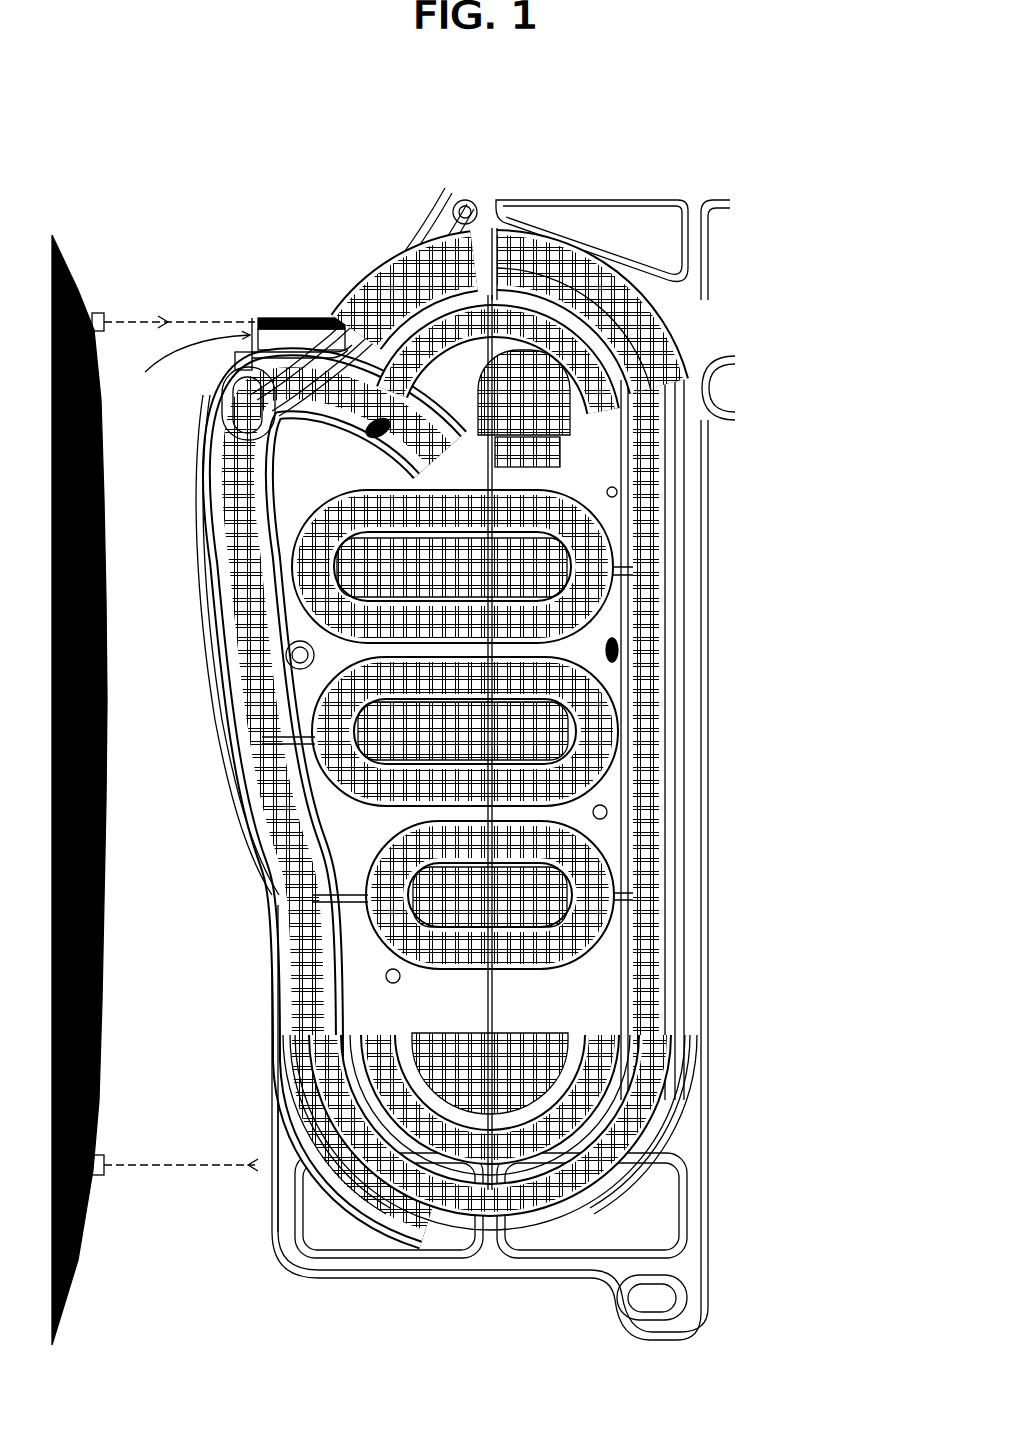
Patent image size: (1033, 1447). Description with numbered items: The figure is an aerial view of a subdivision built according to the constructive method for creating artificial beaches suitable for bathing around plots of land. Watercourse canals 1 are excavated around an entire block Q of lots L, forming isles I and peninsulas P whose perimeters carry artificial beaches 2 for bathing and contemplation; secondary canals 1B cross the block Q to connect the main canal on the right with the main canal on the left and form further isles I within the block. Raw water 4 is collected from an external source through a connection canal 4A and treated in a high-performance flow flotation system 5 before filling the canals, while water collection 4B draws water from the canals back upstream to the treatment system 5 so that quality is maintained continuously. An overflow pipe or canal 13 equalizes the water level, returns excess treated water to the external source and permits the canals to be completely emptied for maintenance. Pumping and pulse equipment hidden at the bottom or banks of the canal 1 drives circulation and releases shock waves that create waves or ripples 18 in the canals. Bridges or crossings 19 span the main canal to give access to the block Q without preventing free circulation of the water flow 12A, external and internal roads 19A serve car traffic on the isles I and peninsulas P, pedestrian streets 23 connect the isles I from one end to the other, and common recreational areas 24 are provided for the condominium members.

The watercourse canals 1 is at (642, 350).
The secondary canals 1B is at (345, 475).
The artificial beaches 2 is at (470, 300).
The raw water 4 is at (75, 262).
The connection canal 4A is at (227, 316).
The water collection from canals 4B is at (180, 362).
The high-performance flow flotation system 5 is at (302, 316).
The water flow 12A is at (336, 352).
The overflow pipe or canal 13 is at (226, 1185).
The waves or ripples 18 is at (395, 400).
The bridges, passageways or crossings 19 is at (486, 292).
The external and internal roads 19A is at (272, 530).
The pedestrian streets 23 is at (662, 456).
The common recreational areas 24 is at (365, 425).
The isles I is at (470, 330).
The lots L is at (310, 690).
The peninsulas P is at (252, 880).
The block Q is at (716, 1096).